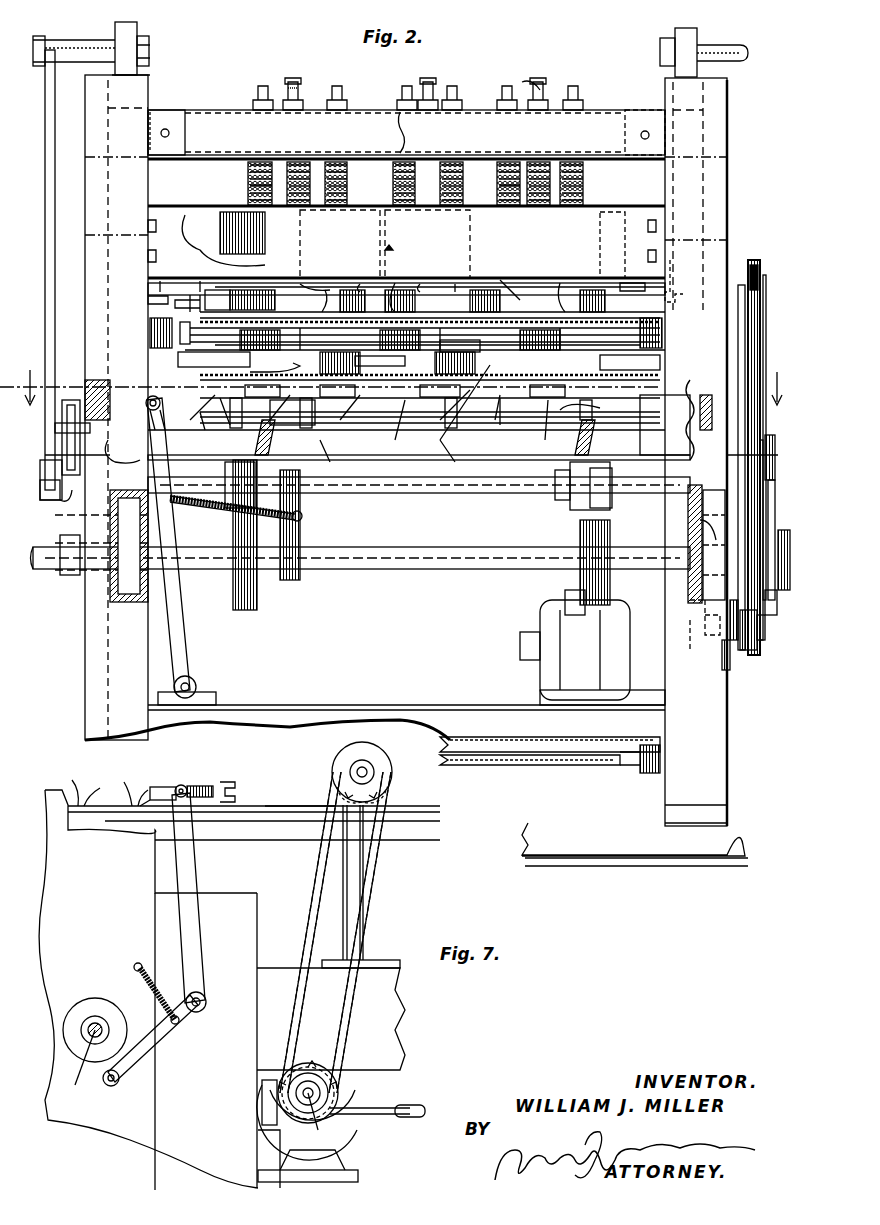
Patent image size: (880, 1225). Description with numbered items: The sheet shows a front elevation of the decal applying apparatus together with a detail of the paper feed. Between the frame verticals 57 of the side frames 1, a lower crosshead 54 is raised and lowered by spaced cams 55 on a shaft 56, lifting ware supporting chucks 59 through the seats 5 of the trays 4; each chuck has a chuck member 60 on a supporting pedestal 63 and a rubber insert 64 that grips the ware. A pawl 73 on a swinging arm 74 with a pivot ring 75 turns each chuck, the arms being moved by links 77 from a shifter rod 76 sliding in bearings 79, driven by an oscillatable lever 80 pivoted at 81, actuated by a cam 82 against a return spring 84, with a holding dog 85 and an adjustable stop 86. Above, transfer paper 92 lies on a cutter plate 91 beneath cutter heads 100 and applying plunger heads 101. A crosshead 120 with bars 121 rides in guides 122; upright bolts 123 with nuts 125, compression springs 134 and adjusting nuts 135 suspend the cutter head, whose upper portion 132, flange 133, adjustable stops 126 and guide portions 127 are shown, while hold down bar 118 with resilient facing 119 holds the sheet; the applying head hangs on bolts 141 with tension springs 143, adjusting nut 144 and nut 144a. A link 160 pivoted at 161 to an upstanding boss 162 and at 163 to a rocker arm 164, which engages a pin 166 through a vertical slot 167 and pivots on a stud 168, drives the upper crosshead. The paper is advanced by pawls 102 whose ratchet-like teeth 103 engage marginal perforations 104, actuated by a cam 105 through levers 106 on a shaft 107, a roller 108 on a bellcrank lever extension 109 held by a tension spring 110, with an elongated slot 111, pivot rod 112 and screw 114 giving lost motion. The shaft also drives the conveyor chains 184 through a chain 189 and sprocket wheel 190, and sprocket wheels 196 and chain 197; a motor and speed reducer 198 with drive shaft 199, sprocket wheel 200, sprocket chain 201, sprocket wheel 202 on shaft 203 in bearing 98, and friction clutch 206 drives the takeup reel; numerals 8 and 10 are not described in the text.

In FIG. 2, the side frame 1 is at (128, 590).
In FIG. 7, the side frame 1 is at (400, 1015).
In FIG. 2, the tray 4 is at (185, 362).
In FIG. 2, the seat 5 is at (545, 782).
In FIG. 2, the plate 8 is at (210, 288).
In FIG. 2, the mold transfer unit 10 is at (405, 376).
In FIG. 2, the lower crosshead 54 is at (407, 493).
In FIG. 2, the cam 55 is at (285, 600).
In FIG. 2, the shaft 56 is at (55, 572).
In FIG. 7, the shaft 56 is at (72, 1064).
In FIG. 2, the frame vertical 57 is at (85, 150).
In FIG. 7, the frame vertical 57 is at (155, 1155).
In FIG. 2, the ware supporting chuck 59 is at (335, 405).
In FIG. 2, the chuck member 60 is at (316, 403).
In FIG. 2, the supporting pedestal 63 is at (419, 439).
In FIG. 2, the rubber insert 64 is at (555, 297).
In FIG. 2, the pawl 73 is at (520, 364).
In FIG. 2, the swinging arm 74 is at (228, 400).
In FIG. 2, the pivot ring 75 is at (403, 420).
In FIG. 2, the shifter rod 76 is at (586, 404).
In FIG. 2, the link 77 is at (195, 418).
In FIG. 2, the bearing 79 is at (280, 420).
In FIG. 2, the oscillatable lever 80 is at (183, 650).
In FIG. 2, the pivot 81 is at (196, 688).
In FIG. 2, the cam 82 is at (235, 590).
In FIG. 2, the return spring 84 is at (298, 520).
In FIG. 2, the holding dog 85 is at (453, 357).
In FIG. 2, the adjustable stop 86 is at (672, 420).
In FIG. 2, the cutter plate 91 is at (322, 301).
In FIG. 2, the transfer paper 92 is at (406, 274).
In FIG. 7, the transfer paper 92 is at (288, 802).
In FIG. 2, the bearing 98 is at (680, 274).
In FIG. 2, the cutter head 100 is at (495, 288).
In FIG. 2, the applying plunger head 101 is at (220, 230).
In FIG. 2, the pawl 102 is at (615, 278).
In FIG. 7, the pawl 102 is at (163, 787).
In FIG. 7, the ratchet-like teeth 103 is at (119, 783).
In FIG. 7, the marginal perforation 104 is at (68, 784).
In FIG. 2, the cam 105 is at (700, 528).
In FIG. 7, the cam 105 is at (102, 998).
In FIG. 2, the lever 106 is at (148, 368).
In FIG. 7, the lever 106 is at (190, 935).
In FIG. 2, the shaft 107 is at (525, 492).
In FIG. 7, the shaft 107 is at (200, 1008).
In FIG. 2, the roller 108 is at (710, 660).
In FIG. 7, the roller 108 is at (120, 1082).
In FIG. 2, the bellcrank lever extension 109 is at (700, 516).
In FIG. 7, the bellcrank lever extension 109 is at (152, 1042).
In FIG. 2, the tension spring 110 is at (770, 457).
In FIG. 7, the tension spring 110 is at (135, 965).
In FIG. 7, the elongated slot 111 is at (205, 786).
In FIG. 2, the pivot rod 112 is at (148, 281).
In FIG. 7, the pivot rod 112 is at (186, 786).
In FIG. 7, the screw 114 is at (254, 792).
In FIG. 2, the hold down bar 118 is at (417, 301).
In FIG. 2, the resilient facing 119 is at (404, 298).
In FIG. 2, the crosshead 120 is at (165, 110).
In FIG. 2, the bar 121 is at (212, 122).
In FIG. 2, the guide 122 is at (140, 183).
In FIG. 2, the upright bolt 123 is at (295, 78).
In FIG. 2, the nut 125 is at (320, 84).
In FIG. 2, the adjustable stop 126 is at (381, 275).
In FIG. 2, the guide portion 127 is at (309, 273).
In FIG. 2, the upper portion of cutter head 132 is at (215, 218).
In FIG. 2, the flange 133 is at (454, 275).
In FIG. 2, the compression spring 134 is at (330, 168).
In FIG. 2, the adjusting nut 135 is at (598, 256).
In FIG. 2, the upright bolt 141 is at (262, 86).
In FIG. 2, the tension spring 143 is at (250, 190).
In FIG. 2, the adjusting nut 144 is at (223, 239).
In FIG. 2, the nut 144a is at (325, 100).
In FIG. 2, the link 160 is at (47, 230).
In FIG. 2, the pivot 161 is at (90, 34).
In FIG. 2, the upstanding boss 162 is at (137, 26).
In FIG. 2, the pivot 163 is at (60, 502).
In FIG. 2, the rocker arm 164 is at (70, 540).
In FIG. 2, the pin 166 is at (62, 430).
In FIG. 2, the vertical slot 167 is at (92, 463).
In FIG. 2, the stud 168 is at (55, 478).
In FIG. 2, the chain 184 is at (148, 340).
In FIG. 2, the chain 189 is at (785, 532).
In FIG. 2, the sprocket wheel 190 is at (762, 597).
In FIG. 2, the sprocket wheel 196 is at (760, 622).
In FIG. 2, the sprocket chain 197 is at (766, 447).
In FIG. 2, the motor and speed reducer 198 is at (540, 680).
In FIG. 7, the motor and speed reducer 198 is at (360, 1135).
In FIG. 7, the drive shaft 199 is at (306, 1121).
In FIG. 2, the sprocket wheel 200 is at (752, 650).
In FIG. 7, the sprocket wheel 200 is at (330, 1085).
In FIG. 2, the sprocket chain 201 is at (762, 400).
In FIG. 7, the sprocket chain 201 is at (310, 870).
In FIG. 2, the sprocket wheel 202 is at (755, 260).
In FIG. 7, the sprocket wheel 202 is at (374, 779).
In FIG. 7, the shaft 203 is at (370, 794).
In FIG. 2, the friction clutch 206 is at (722, 667).
In FIG. 7, the friction clutch 206 is at (323, 1070).